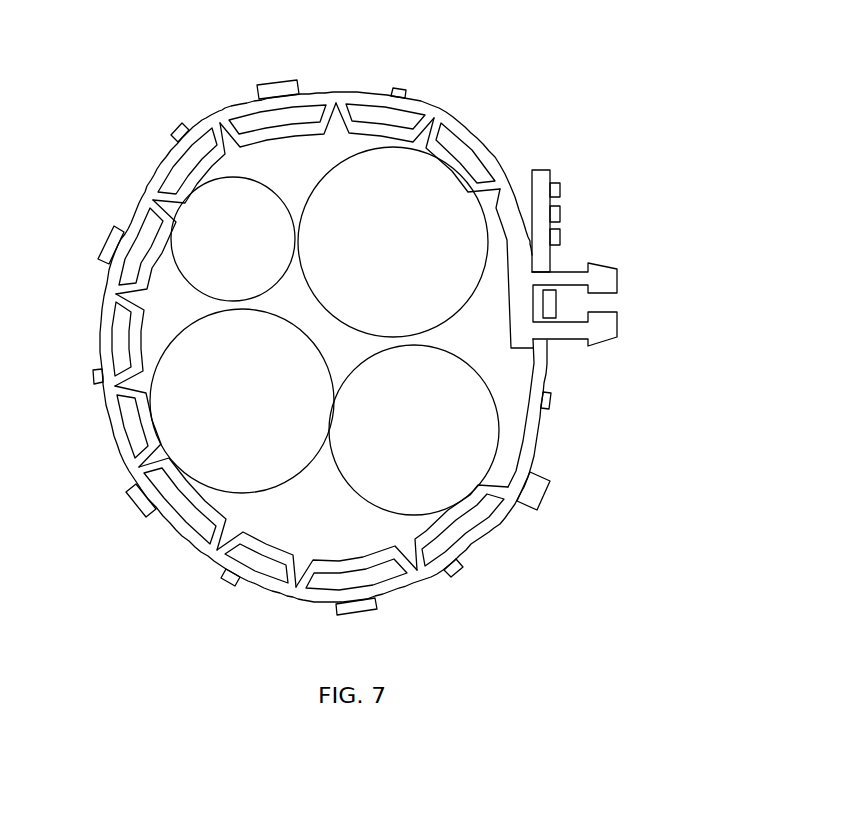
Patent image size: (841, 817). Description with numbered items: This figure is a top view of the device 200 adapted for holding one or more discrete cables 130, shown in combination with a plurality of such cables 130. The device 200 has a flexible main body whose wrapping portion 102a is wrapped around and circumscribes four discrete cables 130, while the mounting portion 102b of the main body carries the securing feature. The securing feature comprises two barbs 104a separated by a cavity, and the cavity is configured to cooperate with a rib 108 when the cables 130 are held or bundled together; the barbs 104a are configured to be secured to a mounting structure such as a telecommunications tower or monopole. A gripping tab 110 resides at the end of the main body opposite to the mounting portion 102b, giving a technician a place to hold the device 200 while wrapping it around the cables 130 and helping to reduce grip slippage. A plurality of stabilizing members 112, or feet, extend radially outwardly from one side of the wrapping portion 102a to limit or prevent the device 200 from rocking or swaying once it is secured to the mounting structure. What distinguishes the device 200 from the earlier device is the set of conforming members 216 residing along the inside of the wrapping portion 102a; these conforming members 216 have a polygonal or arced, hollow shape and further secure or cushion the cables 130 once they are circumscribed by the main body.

The device 200 is at (136, 133).
The wrapping portion 102a is at (455, 127).
The mounting portion 102b is at (513, 305).
The conforming members 216 is at (368, 114).
The discrete cables 130 is at (262, 266).
The gripping tab 110 is at (558, 190).
The barbs 104a is at (603, 268).
The rib 108 is at (557, 304).
The stabilizing members 112 is at (225, 588).